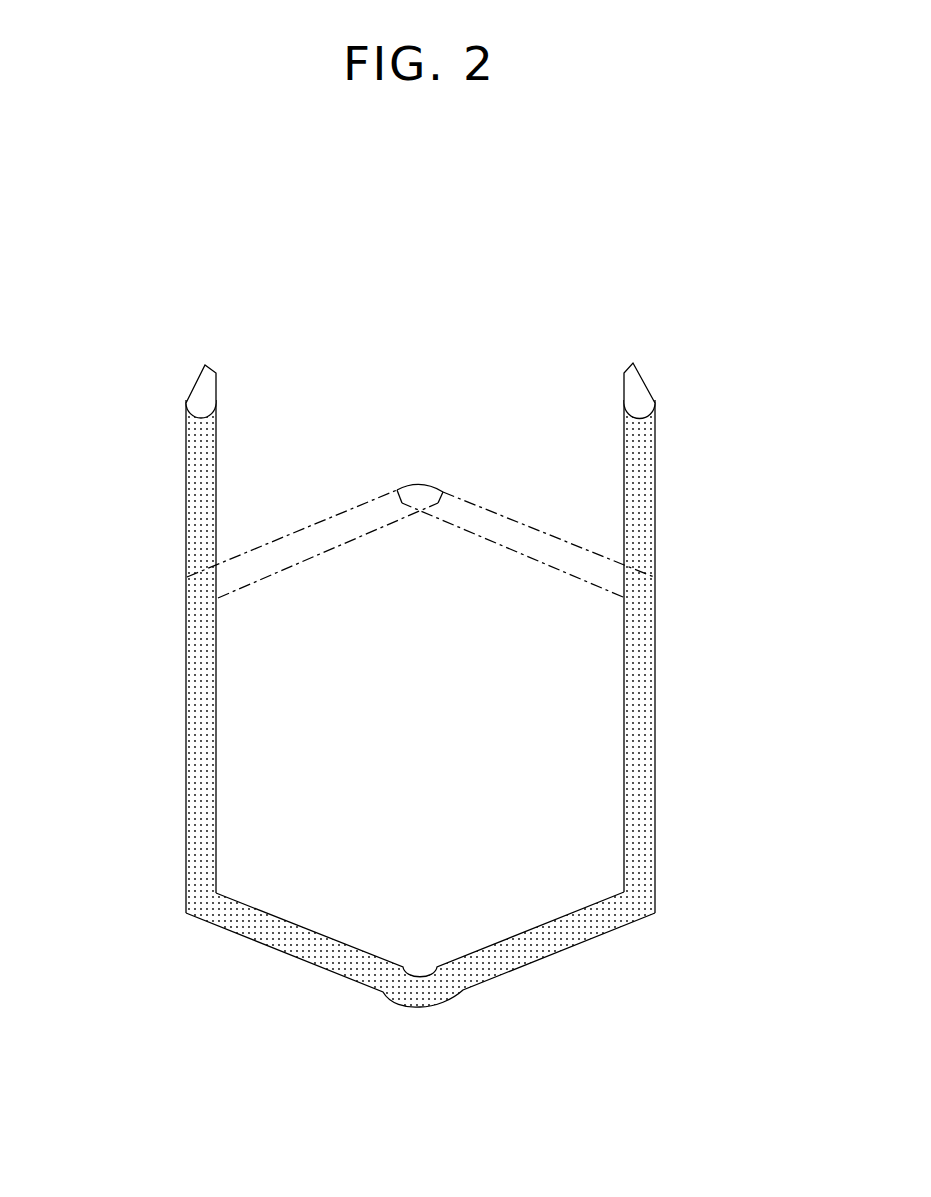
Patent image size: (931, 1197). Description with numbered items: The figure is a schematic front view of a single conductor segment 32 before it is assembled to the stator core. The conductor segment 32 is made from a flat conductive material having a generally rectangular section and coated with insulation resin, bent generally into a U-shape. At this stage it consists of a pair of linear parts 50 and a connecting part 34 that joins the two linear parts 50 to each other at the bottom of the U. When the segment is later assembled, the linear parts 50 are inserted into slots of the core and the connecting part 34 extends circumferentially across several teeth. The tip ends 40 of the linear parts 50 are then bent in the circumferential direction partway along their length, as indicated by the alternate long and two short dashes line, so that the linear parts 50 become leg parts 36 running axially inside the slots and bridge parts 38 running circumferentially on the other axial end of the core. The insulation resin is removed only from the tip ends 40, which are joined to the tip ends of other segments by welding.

The conductor segment 32 is at (435, 615).
The connecting part 34 is at (527, 950).
The leg parts 36 is at (197, 733).
The bridge parts 38 is at (308, 528).
The tip ends 40 is at (197, 393).
The linear parts 50 is at (197, 533).